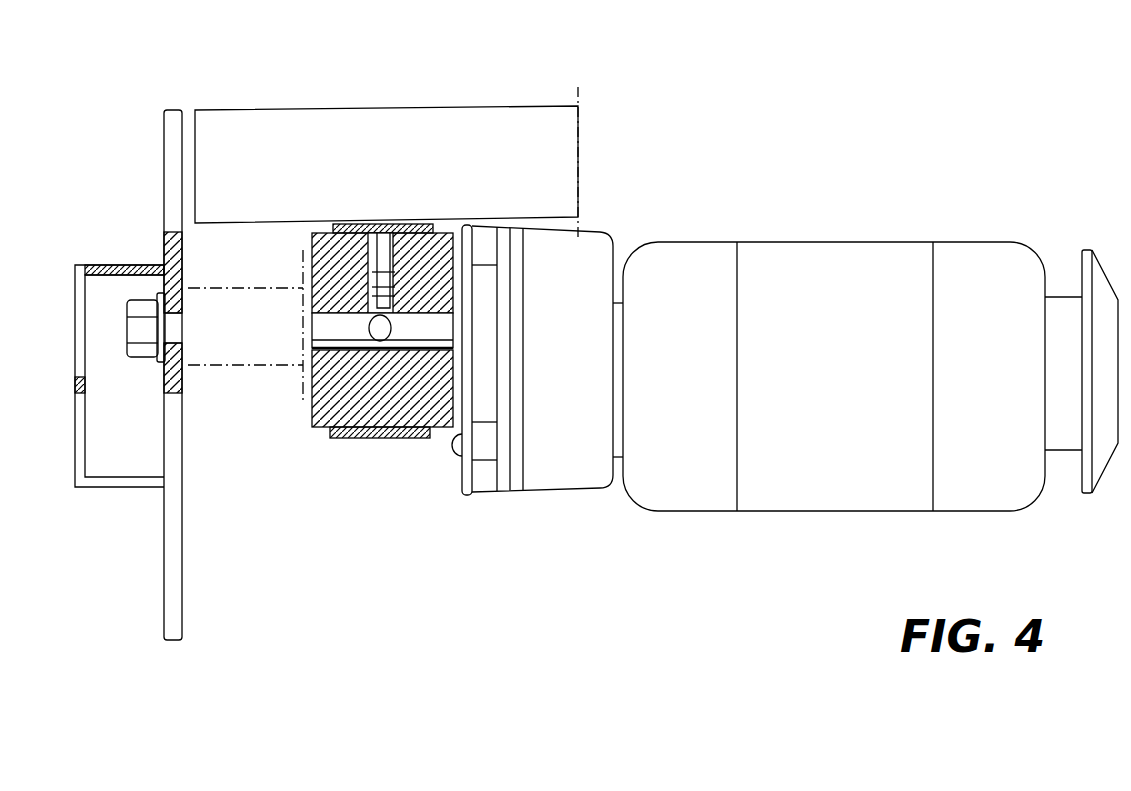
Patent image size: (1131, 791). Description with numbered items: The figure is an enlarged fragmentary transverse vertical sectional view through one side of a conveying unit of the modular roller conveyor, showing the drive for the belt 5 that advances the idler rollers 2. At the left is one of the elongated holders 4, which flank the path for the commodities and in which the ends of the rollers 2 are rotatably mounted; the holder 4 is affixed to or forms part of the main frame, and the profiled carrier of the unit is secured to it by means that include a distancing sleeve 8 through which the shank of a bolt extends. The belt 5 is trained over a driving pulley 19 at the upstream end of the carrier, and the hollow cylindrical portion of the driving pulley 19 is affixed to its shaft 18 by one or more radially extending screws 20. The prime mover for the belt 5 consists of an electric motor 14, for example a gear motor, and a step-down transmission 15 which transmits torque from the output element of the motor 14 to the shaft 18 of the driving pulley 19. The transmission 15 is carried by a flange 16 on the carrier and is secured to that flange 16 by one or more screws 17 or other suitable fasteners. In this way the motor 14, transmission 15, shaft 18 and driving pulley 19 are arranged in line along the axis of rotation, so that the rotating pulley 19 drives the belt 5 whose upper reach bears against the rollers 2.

The idler roller 2 is at (313, 108).
The holder 4 is at (170, 520).
The belt 5 is at (348, 440).
The distancing sleeve 8 is at (253, 370).
The electric motor 14 is at (868, 257).
The transmission 15 is at (568, 477).
The flange 16 is at (467, 498).
The screw 17 is at (453, 447).
The shaft 18 is at (447, 332).
The driving pulley 19 is at (312, 428).
The radially extending screw 20 is at (383, 290).